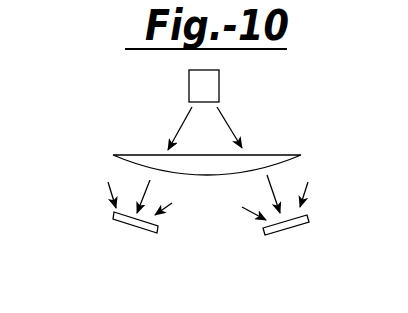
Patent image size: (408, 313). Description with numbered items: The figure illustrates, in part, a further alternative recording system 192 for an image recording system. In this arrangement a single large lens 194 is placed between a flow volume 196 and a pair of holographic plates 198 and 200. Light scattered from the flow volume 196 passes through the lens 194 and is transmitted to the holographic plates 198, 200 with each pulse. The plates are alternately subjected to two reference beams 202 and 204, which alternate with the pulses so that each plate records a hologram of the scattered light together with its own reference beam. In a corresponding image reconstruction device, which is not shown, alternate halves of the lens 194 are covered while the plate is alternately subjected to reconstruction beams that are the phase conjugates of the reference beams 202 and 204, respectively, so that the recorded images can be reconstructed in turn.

The recording system 192 is at (152, 81).
The single large lens 194 is at (126, 155).
The flow volume 196 is at (220, 92).
The holographic plate 198 is at (128, 226).
The holographic plate 200 is at (285, 236).
The reference beam 202 is at (110, 189).
The reference beam 204 is at (172, 203).